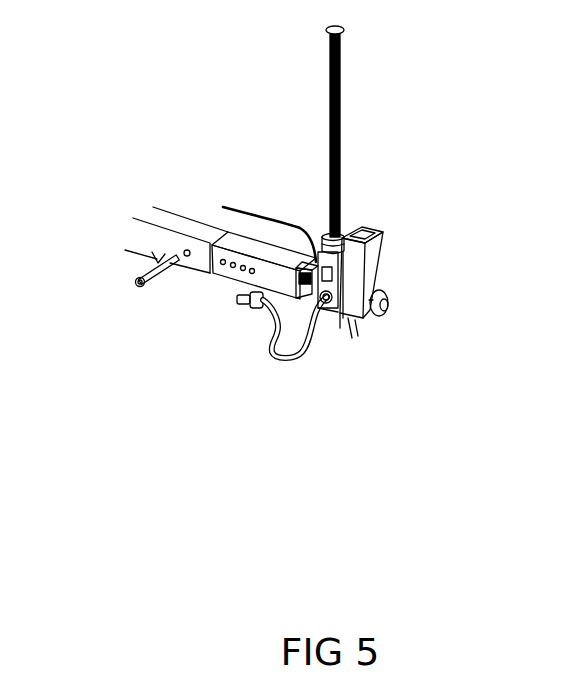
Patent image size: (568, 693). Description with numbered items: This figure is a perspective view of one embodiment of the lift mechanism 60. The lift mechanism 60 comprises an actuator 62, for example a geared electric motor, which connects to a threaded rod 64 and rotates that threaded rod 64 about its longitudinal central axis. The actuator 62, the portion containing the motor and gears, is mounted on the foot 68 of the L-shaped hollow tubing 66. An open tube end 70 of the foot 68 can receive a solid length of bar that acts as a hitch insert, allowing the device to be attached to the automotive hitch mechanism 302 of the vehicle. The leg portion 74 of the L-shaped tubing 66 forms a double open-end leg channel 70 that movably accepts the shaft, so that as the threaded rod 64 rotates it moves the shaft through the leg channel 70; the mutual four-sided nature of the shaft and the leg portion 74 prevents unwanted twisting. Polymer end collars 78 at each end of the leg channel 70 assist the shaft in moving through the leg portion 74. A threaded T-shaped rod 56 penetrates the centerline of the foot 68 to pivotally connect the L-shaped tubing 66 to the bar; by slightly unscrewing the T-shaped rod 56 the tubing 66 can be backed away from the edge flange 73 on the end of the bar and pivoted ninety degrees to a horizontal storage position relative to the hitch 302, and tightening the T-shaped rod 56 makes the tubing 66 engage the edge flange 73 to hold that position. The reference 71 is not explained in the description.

The threaded T-shaped rod 56 is at (383, 303).
The lift mechanism 60 is at (330, 162).
The actuator 62 is at (311, 234).
The threaded rod 64 is at (329, 77).
The L-shaped hollow tubing 66 is at (394, 212).
The foot 68 is at (350, 316).
The open tube end / double open-end leg channel 70 is at (217, 278).
The bore 71 is at (362, 217).
The edge flange 73 is at (272, 328).
The leg portion 74 is at (390, 272).
The polymer end collars 78 is at (380, 252).
The hitch mechanism 302 is at (145, 236).